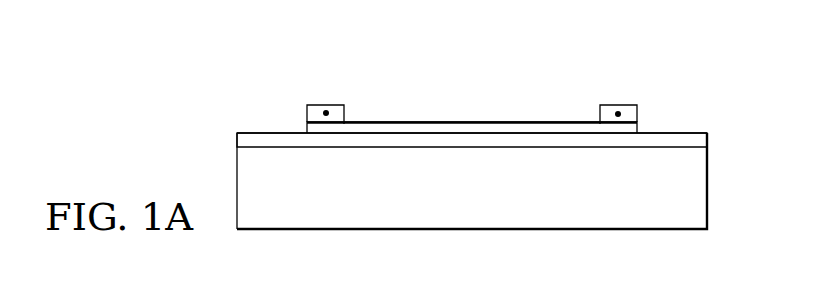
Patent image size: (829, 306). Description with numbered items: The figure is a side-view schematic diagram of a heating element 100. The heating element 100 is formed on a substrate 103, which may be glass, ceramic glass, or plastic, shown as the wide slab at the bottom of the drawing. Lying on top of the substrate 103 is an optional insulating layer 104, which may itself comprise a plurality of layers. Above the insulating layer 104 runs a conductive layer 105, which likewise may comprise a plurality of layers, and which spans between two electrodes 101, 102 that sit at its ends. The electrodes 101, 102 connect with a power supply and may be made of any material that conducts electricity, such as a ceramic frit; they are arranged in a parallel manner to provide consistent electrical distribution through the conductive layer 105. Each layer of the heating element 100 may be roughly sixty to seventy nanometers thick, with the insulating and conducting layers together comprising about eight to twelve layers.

The heating element 100 is at (243, 67).
The electrode 101 is at (317, 104).
The electrode 102 is at (625, 104).
The substrate 103 is at (494, 204).
The insulating layer 104 is at (680, 133).
The conductive layer 105 is at (491, 121).